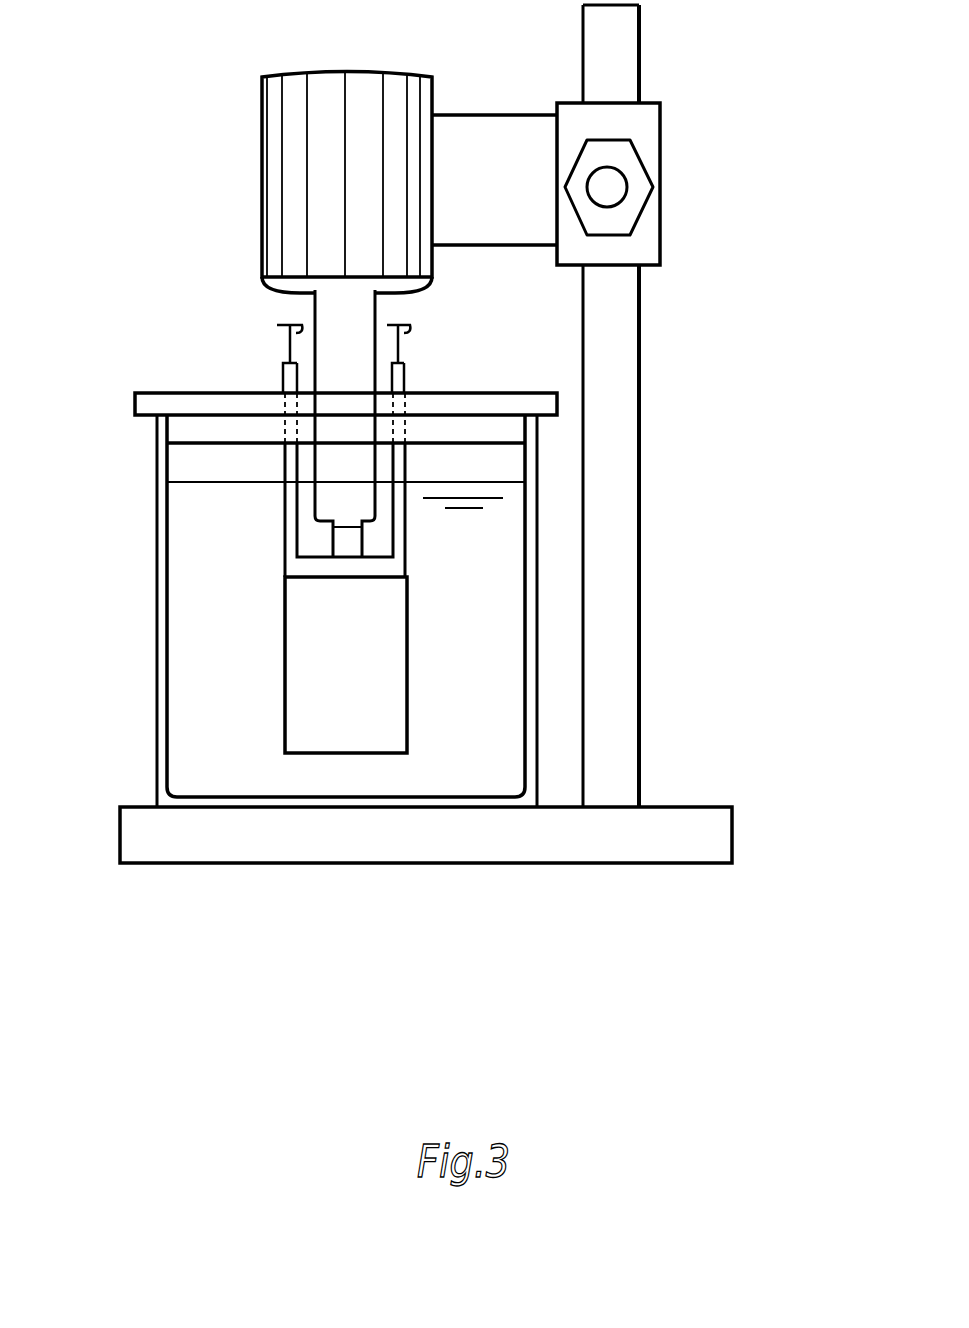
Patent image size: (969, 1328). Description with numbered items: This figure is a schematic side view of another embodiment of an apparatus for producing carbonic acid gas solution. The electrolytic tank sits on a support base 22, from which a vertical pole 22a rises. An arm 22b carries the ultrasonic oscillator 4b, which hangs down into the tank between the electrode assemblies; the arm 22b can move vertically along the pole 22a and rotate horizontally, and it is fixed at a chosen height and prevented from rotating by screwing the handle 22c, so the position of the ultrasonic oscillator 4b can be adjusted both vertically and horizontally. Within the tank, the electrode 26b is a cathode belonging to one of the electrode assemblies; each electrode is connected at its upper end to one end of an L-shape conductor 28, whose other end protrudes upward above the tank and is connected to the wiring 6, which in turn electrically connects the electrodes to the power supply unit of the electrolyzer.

The ultrasonic oscillator 4b is at (337, 462).
The wiring 6 is at (283, 345).
The support base 22 is at (734, 840).
The vertical pole 22a is at (641, 578).
The arm 22b is at (492, 115).
The handle 22c is at (643, 173).
The electrode 26b is at (342, 760).
The L-shape conductor 28 is at (285, 527).